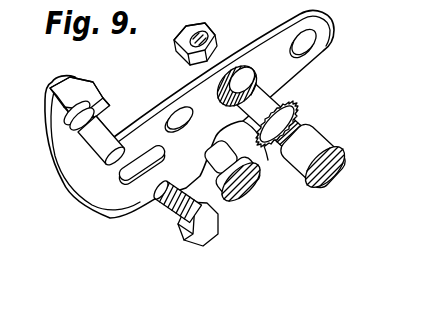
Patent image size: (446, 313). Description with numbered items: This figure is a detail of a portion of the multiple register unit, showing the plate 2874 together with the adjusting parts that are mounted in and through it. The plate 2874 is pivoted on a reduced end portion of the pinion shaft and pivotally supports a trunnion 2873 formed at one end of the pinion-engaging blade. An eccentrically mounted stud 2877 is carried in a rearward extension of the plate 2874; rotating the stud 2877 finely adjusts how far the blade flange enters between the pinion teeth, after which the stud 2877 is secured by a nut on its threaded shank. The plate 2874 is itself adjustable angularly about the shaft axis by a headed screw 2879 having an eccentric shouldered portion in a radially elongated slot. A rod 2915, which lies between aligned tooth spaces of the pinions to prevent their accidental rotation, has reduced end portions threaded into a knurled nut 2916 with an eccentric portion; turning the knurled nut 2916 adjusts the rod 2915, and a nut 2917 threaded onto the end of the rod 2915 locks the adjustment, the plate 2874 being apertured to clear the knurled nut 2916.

The plate 2874 is at (318, 50).
The stud 2877 is at (105, 147).
The headed screw 2879 is at (203, 238).
The trunnion 2873 is at (245, 186).
The rod 2915 is at (319, 142).
The knurled nut 2916 is at (298, 107).
The nut 2917 is at (208, 40).